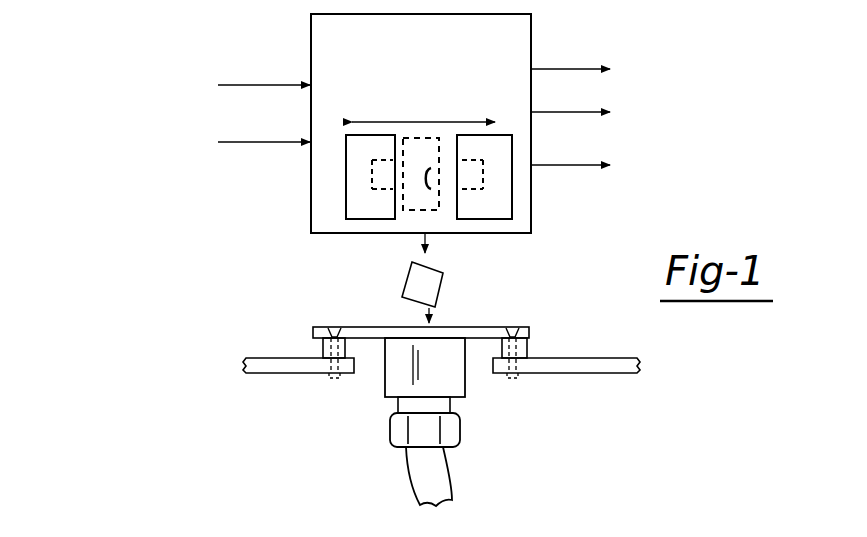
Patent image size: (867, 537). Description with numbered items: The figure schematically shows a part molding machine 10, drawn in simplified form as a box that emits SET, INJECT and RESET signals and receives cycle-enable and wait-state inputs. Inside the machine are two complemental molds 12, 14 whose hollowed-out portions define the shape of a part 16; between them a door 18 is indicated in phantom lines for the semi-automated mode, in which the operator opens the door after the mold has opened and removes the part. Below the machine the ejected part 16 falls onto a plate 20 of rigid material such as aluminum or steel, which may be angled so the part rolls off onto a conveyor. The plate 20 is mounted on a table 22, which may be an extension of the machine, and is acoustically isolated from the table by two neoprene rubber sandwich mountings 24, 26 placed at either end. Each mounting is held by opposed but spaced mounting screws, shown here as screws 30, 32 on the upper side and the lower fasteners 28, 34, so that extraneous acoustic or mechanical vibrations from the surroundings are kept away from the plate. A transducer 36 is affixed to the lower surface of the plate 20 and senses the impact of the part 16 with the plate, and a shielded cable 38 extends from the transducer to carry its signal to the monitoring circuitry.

The part molding machine 10 is at (514, 42).
The mold 12 is at (346, 147).
The mold 14 is at (512, 135).
The part 16 is at (436, 280).
The door 18 is at (423, 137).
The plate 20 is at (480, 327).
The table 22 is at (572, 373).
The sandwich mounting 24 is at (323, 348).
The sandwich mounting 26 is at (527, 350).
The left fastener nut 28 is at (330, 374).
The mounting screw 30 is at (357, 306).
The mounting screw 32 is at (512, 374).
The right bolt 34 is at (515, 328).
The transducer 36 is at (385, 397).
The shielded cable 38 is at (430, 478).